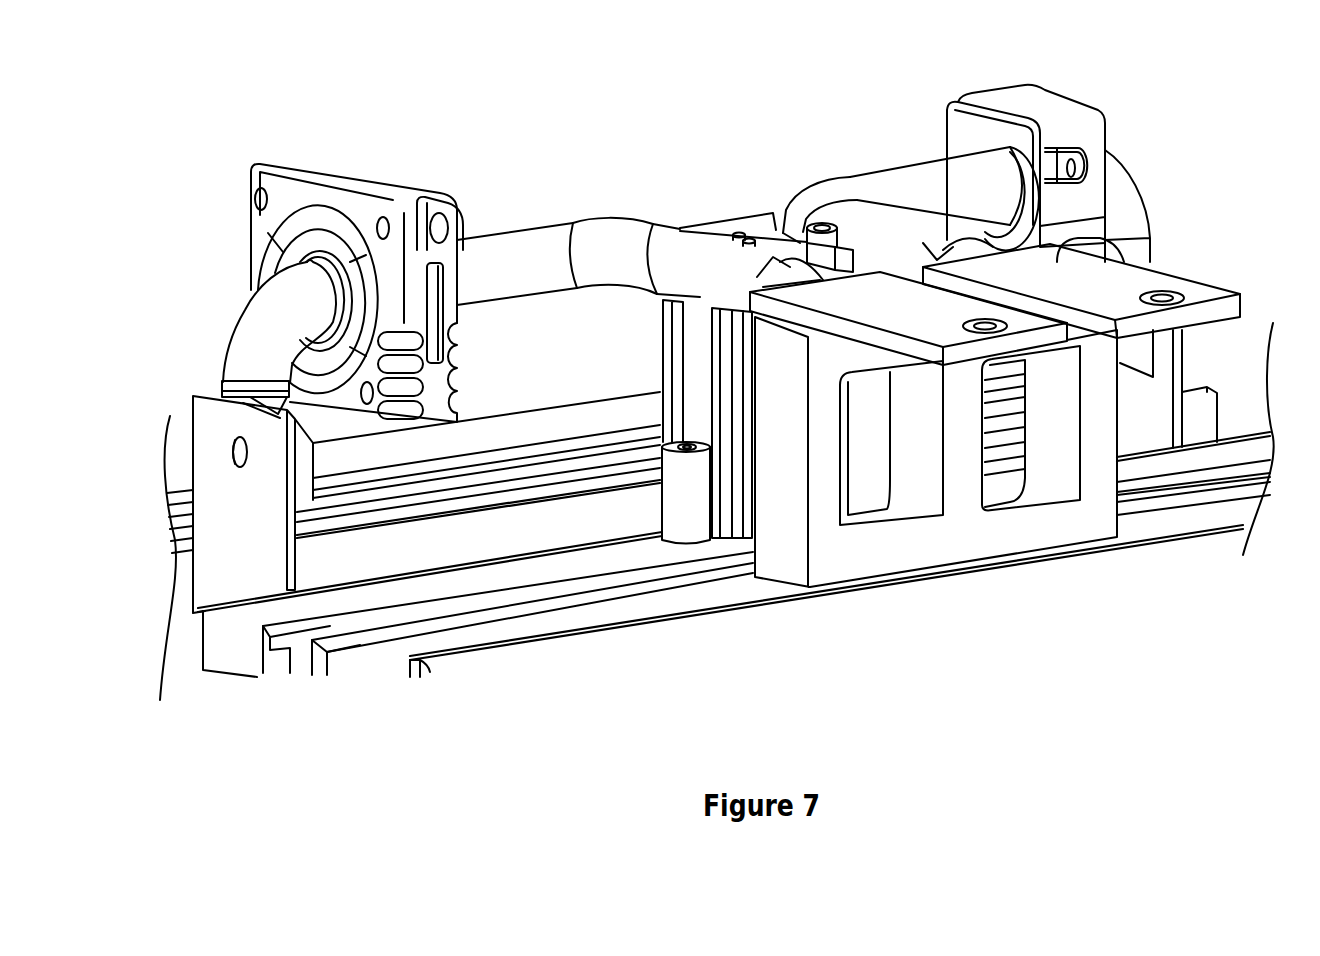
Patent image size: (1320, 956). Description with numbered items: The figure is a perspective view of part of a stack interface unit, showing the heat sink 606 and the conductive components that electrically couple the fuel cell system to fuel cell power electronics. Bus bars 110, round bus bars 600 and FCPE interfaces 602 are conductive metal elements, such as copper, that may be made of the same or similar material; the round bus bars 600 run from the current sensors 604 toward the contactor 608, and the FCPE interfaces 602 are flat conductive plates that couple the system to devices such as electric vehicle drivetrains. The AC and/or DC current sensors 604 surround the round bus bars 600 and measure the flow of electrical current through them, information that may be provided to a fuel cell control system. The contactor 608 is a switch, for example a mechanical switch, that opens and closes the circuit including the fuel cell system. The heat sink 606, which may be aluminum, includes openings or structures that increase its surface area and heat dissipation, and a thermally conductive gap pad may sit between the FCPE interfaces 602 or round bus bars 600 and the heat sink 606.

The bus bars 110 is at (240, 524).
The round bus bars 600 is at (880, 187).
The FCPE interfaces 602 is at (1108, 287).
The AC and/or DC current sensors 604 is at (395, 190).
The heat sink 606 is at (968, 532).
The contactor 608 is at (728, 224).